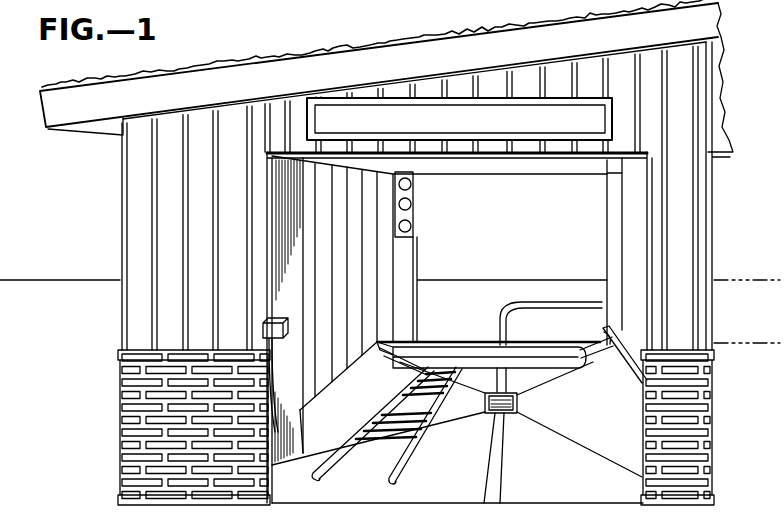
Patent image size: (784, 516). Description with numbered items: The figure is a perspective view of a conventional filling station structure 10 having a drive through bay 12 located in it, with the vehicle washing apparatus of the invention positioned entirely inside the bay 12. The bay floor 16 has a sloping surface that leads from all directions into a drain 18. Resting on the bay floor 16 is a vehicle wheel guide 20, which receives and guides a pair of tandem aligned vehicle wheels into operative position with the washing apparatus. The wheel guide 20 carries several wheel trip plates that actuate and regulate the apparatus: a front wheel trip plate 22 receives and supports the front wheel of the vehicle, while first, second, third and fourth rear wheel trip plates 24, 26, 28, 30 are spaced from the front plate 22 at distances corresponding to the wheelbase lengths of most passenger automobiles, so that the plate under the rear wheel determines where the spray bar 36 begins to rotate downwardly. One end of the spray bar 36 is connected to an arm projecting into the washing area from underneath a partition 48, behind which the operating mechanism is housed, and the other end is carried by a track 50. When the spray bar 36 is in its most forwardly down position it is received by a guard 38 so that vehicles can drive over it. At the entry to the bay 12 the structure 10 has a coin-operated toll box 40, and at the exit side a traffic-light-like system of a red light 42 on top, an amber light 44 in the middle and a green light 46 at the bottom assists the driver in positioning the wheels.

The filling station structure 10 is at (318, 41).
The drive through bay 12 is at (610, 206).
The bay floor 16 is at (626, 482).
The drain 18 is at (518, 402).
The vehicle wheel guide 20 is at (415, 412).
The front wheel trip plate 22 is at (424, 392).
The first rear wheel trip plate 24 is at (397, 421).
The second rear wheel trip plate 26 is at (417, 438).
The third rear wheel trip plate 28 is at (370, 433).
The fourth rear wheel trip plate 30 is at (401, 460).
The spray bar 36 is at (420, 343).
The guard 38 is at (533, 347).
The coin-operated toll box 40 is at (267, 320).
The red light 42 is at (412, 184).
The amber light 44 is at (412, 204).
The green light 46 is at (412, 226).
The partition 48 is at (340, 365).
The track 50 is at (623, 345).